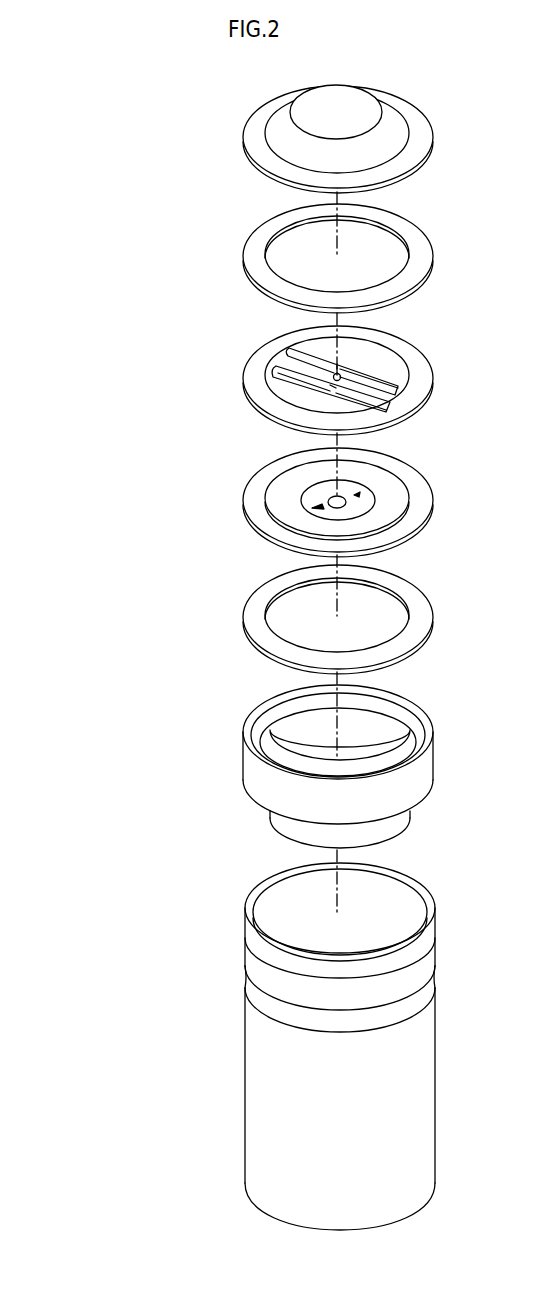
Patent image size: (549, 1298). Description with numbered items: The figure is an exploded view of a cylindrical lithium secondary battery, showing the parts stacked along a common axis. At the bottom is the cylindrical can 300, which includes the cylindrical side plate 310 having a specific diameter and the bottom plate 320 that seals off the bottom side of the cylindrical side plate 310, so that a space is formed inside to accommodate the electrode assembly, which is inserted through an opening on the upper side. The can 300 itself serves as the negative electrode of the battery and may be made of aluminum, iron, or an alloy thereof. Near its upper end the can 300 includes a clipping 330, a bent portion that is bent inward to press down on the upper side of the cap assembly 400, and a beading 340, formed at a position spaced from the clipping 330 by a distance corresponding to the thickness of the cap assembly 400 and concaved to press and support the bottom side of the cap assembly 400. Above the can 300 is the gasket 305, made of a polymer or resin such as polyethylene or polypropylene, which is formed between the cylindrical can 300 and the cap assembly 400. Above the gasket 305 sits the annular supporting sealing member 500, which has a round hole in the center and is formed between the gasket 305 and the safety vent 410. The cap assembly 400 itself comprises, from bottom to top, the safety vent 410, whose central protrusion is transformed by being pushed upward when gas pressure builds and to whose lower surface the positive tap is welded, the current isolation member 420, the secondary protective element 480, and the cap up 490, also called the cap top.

The cap assembly 400 is at (133, 127).
The cap up 490 is at (255, 132).
The secondary protective element 480 is at (255, 252).
The current isolation member 420 is at (255, 378).
The safety vent 410 is at (255, 500).
The supporting sealing member 500 is at (255, 612).
The gasket 305 is at (257, 772).
The cylindrical can 300 is at (137, 945).
The clipping 330 is at (257, 950).
The beading 340 is at (257, 993).
The cylindrical side plate 310 is at (257, 1073).
The bottom plate 320 is at (262, 1210).